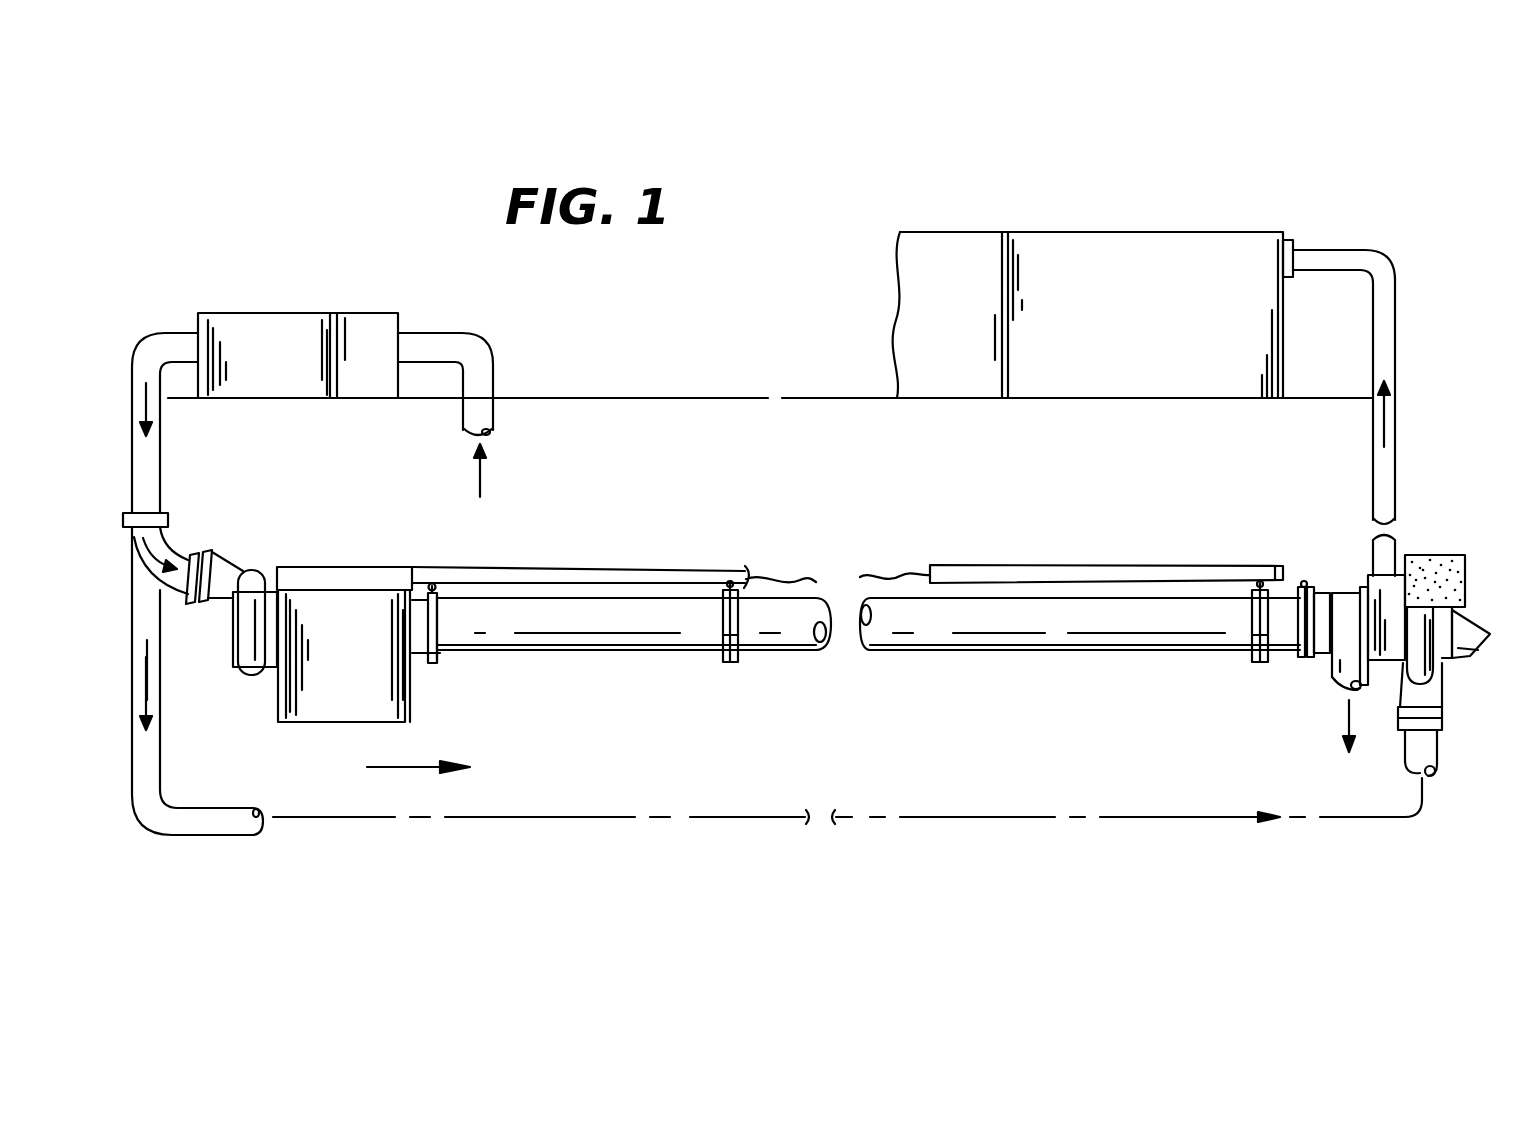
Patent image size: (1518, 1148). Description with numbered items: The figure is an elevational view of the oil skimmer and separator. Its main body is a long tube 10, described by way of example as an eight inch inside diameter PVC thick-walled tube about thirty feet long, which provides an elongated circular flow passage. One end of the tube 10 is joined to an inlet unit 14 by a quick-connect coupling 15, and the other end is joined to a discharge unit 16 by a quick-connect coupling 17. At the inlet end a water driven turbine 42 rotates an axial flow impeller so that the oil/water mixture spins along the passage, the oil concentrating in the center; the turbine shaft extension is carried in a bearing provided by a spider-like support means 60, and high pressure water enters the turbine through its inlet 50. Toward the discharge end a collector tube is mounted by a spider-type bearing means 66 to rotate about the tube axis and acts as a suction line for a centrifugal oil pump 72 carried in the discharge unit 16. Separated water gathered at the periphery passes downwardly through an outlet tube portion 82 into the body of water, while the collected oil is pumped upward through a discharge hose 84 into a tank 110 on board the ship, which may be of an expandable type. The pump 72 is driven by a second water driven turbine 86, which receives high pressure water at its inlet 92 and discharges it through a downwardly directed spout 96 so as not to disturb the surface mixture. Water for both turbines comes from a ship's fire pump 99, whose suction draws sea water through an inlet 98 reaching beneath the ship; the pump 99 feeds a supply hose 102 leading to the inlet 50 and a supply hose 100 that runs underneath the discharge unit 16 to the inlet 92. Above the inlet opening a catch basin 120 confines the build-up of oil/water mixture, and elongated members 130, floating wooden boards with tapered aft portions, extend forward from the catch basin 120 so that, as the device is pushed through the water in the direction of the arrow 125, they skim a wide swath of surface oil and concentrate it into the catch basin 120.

The tube 10 is at (706, 638).
The inlet unit 14 is at (310, 734).
The quick-connect coupling 15 is at (434, 598).
The discharge unit 16 is at (1396, 686).
The quick-connect coupling 17 is at (1305, 585).
The water driven turbine 42 is at (258, 578).
The inlet 50 is at (215, 566).
The spider-like support means 60 is at (418, 655).
The spider-type bearing means 66 is at (1320, 655).
The centrifugal oil pump 72 is at (1373, 583).
The outlet tube portion 82 is at (1345, 673).
The discharge hose 84 is at (1380, 462).
The second water driven turbine 86 is at (1422, 607).
The inlet 92 is at (1432, 714).
The spout 96 is at (1478, 642).
The inlet 98 is at (480, 378).
The ship's fire pump 99 is at (373, 322).
The supply hose 100 is at (148, 752).
The supply hose 102 is at (148, 466).
The tank 110 is at (1122, 200).
The catch basin 120 is at (388, 567).
The arrow 125 is at (403, 768).
The elongated members 130 is at (663, 578).